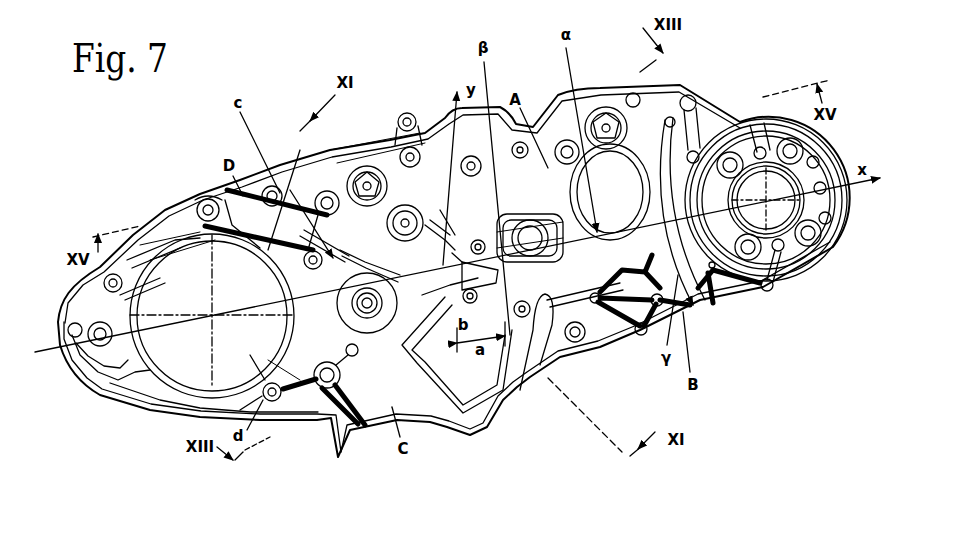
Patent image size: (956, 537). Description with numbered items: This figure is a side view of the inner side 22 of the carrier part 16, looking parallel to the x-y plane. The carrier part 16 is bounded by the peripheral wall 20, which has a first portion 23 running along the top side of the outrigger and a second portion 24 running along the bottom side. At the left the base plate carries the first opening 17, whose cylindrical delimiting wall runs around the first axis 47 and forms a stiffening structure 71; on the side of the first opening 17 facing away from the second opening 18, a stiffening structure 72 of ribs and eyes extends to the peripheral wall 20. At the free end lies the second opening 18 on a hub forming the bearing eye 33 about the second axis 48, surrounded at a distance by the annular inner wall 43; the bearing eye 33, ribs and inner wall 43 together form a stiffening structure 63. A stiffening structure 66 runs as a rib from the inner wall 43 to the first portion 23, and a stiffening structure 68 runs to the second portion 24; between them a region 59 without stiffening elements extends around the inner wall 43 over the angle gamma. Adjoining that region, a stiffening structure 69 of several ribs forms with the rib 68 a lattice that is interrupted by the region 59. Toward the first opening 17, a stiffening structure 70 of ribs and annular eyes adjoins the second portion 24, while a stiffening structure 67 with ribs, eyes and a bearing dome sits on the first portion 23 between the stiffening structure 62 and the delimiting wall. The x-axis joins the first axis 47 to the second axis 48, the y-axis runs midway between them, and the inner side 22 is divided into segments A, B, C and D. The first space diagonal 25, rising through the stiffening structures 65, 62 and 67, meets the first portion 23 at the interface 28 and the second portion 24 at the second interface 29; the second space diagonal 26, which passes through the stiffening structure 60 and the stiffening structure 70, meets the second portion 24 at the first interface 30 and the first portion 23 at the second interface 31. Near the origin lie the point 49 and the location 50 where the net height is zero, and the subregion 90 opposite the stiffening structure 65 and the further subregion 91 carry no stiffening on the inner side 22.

The carrier part 16 is at (779, 77).
The first opening 17 is at (174, 360).
The second opening 18 is at (814, 238).
The peripheral wall 20 is at (100, 395).
The inner side 22 is at (298, 190).
The first portion 23 is at (209, 198).
The second portion 24 is at (170, 413).
The first space diagonal 25 is at (620, 455).
The second space diagonal 26 is at (262, 446).
The interface 28 is at (340, 155).
The second interface 29 is at (538, 370).
The first interface 30 is at (282, 402).
The second interface 31 is at (636, 92).
The bearing eye 33 is at (818, 168).
The inner wall 43 is at (727, 126).
The first axis 47 is at (97, 298).
The second axis 48 is at (800, 272).
The point 49 is at (450, 300).
The location 50 is at (462, 296).
The region without stiffening elements 59 is at (699, 282).
The stiffening structure 60 is at (612, 125).
The stiffening structure 62 is at (401, 148).
The stiffening structure 63 is at (781, 250).
The stiffening structure 65 is at (457, 402).
The stiffening structure 66 is at (707, 135).
The stiffening structure 67 is at (278, 233).
The stiffening structure 68 is at (718, 297).
The stiffening structure 69 is at (641, 336).
The stiffening structure 70 is at (340, 398).
The stiffening structure 71 is at (183, 237).
The stiffening structure 72 is at (138, 233).
The subregion 90 is at (498, 412).
The subregion 91 is at (548, 225).